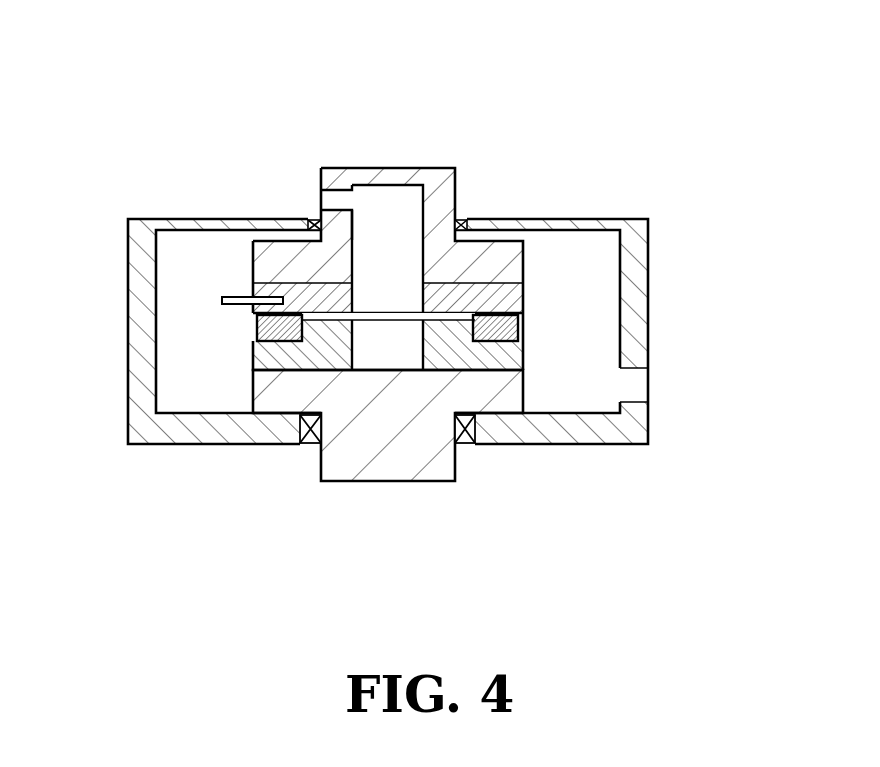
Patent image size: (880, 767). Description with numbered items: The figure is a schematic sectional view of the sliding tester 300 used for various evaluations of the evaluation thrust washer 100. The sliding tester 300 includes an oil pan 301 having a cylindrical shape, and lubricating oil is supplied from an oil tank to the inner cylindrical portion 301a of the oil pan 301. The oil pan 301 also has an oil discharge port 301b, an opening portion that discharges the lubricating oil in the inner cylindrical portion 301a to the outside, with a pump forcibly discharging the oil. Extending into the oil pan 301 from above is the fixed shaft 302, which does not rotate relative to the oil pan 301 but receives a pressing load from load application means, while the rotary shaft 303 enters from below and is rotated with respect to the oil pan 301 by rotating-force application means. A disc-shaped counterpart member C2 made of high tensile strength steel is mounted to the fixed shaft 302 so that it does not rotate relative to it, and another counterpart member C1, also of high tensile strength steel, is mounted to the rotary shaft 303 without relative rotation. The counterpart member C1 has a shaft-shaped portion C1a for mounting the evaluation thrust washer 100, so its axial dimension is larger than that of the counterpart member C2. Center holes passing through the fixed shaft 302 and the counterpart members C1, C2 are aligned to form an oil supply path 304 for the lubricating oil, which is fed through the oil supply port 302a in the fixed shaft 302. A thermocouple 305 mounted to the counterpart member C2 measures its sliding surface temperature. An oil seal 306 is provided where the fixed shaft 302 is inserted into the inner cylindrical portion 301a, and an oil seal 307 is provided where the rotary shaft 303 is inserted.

The sliding tester 300 is at (512, 108).
The oil pan 301 is at (637, 243).
The inner cylindrical portion 301a is at (606, 304).
The oil discharge port 301b is at (637, 385).
The fixed shaft 302 is at (335, 175).
The oil supply port 302a is at (327, 188).
The rotary shaft 303 is at (388, 466).
The oil supply path 304 is at (387, 198).
The thermocouple 305 is at (238, 297).
The oil seal 306 is at (462, 215).
The oil seal 307 is at (465, 438).
The evaluation thrust washer 100 is at (267, 328).
The counterpart member C1 is at (307, 352).
The shaft-shaped portion C1a is at (333, 352).
The counterpart member C2 is at (302, 292).